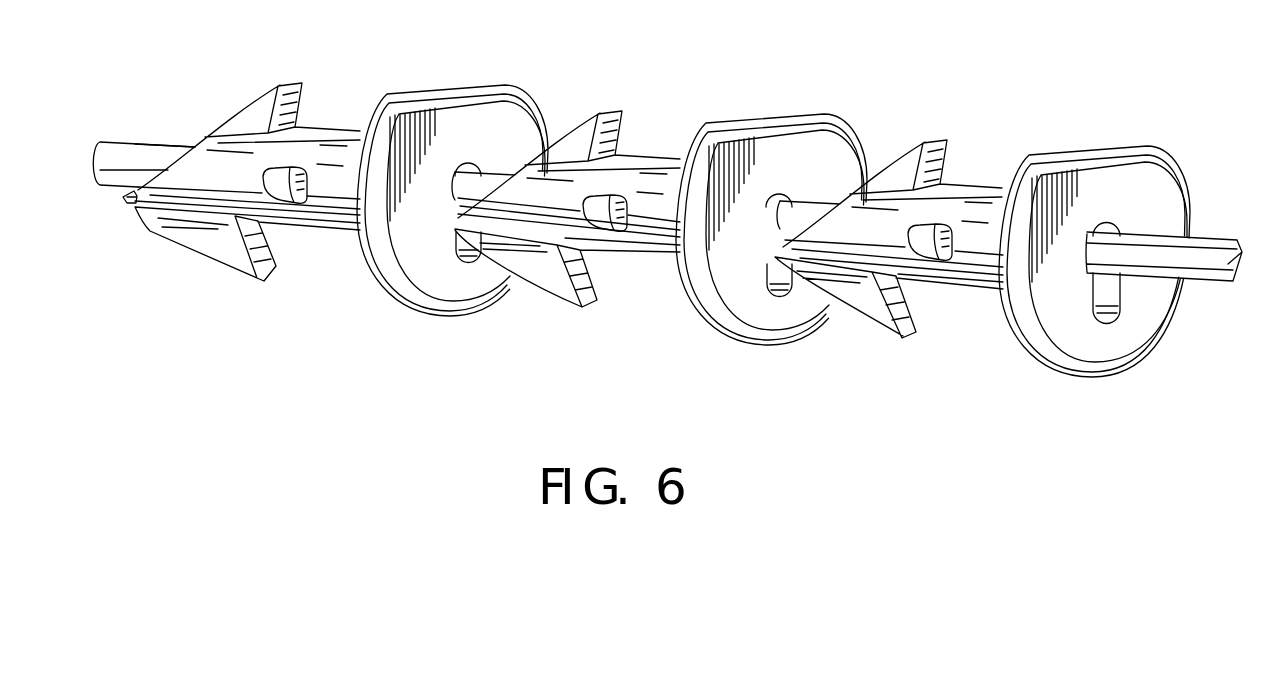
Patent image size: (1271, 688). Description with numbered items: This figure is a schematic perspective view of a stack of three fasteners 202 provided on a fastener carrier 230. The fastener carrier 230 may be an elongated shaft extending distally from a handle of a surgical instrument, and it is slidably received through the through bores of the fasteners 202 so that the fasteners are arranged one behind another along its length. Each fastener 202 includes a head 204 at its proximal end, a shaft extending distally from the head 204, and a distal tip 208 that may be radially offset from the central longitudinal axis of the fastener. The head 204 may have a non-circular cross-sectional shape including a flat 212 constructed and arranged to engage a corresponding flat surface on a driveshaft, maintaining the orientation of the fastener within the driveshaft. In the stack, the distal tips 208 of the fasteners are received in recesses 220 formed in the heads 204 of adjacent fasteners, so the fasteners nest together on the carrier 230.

The fastener 202 is at (331, 129).
The head 204 is at (395, 277).
The distal tip 208 is at (124, 196).
The flat 212 is at (477, 83).
The recess 220 is at (476, 258).
The fastener carrier 230 is at (133, 147).